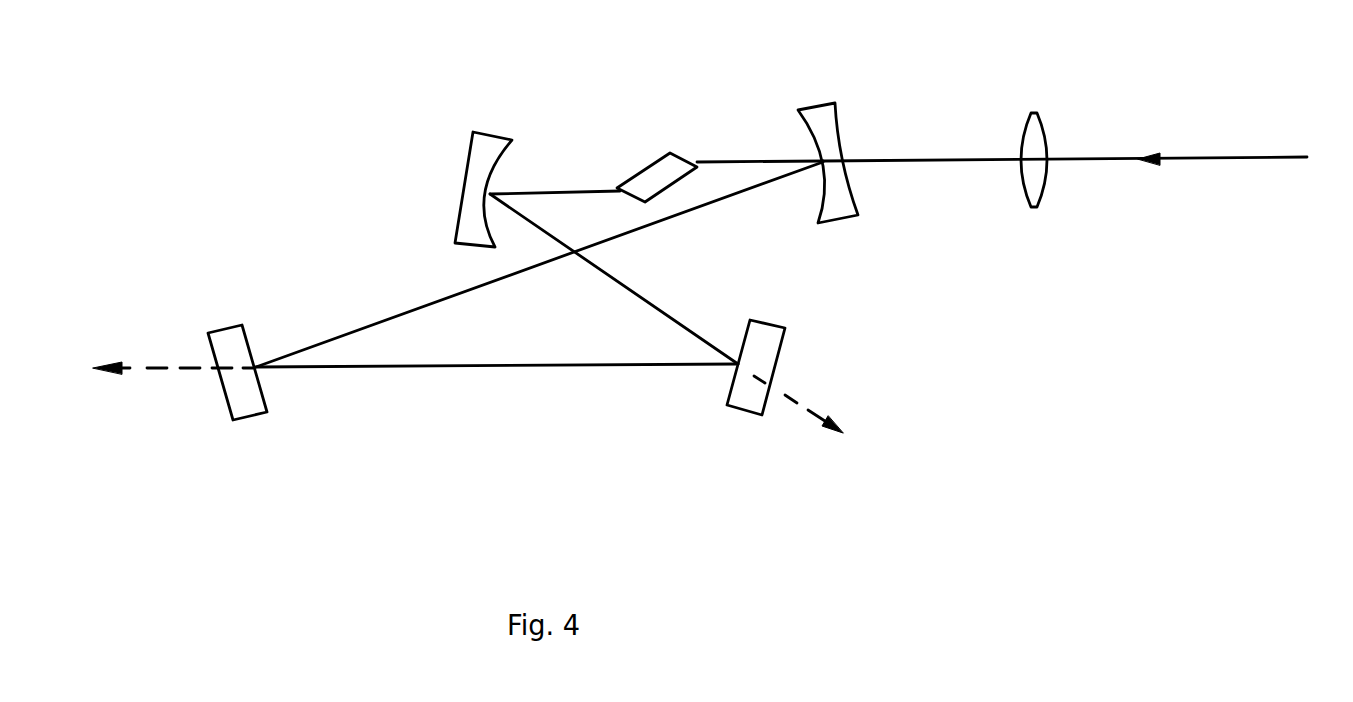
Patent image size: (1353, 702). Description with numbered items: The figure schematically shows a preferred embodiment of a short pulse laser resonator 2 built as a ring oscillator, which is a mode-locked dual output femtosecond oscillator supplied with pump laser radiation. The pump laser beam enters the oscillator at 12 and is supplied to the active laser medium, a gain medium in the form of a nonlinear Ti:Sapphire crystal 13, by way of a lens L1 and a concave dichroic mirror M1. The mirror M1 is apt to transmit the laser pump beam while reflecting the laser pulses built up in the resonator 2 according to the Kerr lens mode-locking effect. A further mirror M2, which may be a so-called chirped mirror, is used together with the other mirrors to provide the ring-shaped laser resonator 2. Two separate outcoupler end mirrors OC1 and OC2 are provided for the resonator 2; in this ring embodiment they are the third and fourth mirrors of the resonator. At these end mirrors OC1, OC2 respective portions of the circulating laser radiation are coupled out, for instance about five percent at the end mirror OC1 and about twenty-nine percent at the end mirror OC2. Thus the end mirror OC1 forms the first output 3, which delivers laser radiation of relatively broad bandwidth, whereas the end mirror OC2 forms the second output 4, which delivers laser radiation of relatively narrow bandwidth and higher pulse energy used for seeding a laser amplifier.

The resonator 2 is at (1036, 413).
The pump laser beam 12 is at (1085, 154).
The Ti:Sapphire crystal 13 is at (654, 159).
The first output 3 is at (813, 420).
The second output 4 is at (156, 366).
The lens L1 is at (1028, 130).
The concave dichroic mirror M1 is at (823, 138).
The mirror M2 is at (457, 176).
The end mirror OC1 is at (751, 377).
The end mirror OC2 is at (250, 382).